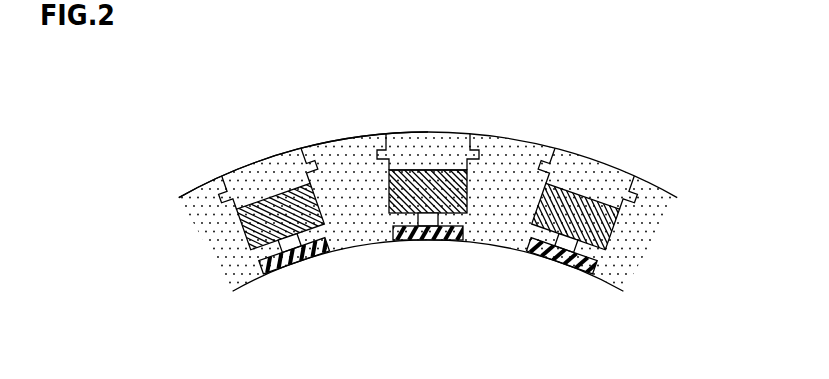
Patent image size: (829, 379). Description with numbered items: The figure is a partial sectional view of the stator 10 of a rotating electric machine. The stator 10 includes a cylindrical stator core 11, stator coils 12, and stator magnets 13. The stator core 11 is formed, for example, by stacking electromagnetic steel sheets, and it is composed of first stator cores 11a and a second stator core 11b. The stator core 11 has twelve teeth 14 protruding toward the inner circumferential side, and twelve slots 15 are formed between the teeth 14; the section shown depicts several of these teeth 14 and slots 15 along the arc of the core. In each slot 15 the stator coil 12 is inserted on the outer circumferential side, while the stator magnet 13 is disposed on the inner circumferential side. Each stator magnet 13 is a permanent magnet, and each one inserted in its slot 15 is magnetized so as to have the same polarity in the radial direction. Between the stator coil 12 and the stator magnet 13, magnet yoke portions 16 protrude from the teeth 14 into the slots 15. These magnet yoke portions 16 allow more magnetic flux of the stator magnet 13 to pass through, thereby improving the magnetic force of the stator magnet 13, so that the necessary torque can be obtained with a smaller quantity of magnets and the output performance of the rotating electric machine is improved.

The stator 10 is at (157, 133).
The stator core 11 is at (260, 158).
The first stator core 11a is at (455, 140).
The second stator core 11b is at (345, 143).
The stator coil 12 is at (413, 180).
The stator magnet 13 is at (455, 240).
The tooth 14 is at (363, 218).
The slot 15 is at (438, 165).
The magnet yoke portion 16 is at (412, 237).